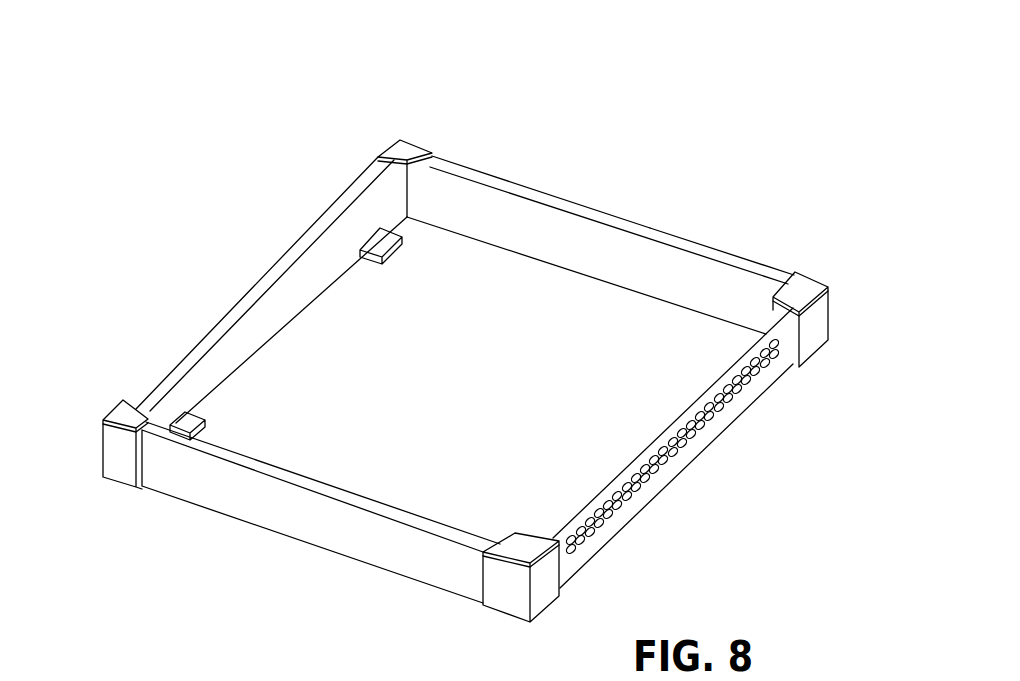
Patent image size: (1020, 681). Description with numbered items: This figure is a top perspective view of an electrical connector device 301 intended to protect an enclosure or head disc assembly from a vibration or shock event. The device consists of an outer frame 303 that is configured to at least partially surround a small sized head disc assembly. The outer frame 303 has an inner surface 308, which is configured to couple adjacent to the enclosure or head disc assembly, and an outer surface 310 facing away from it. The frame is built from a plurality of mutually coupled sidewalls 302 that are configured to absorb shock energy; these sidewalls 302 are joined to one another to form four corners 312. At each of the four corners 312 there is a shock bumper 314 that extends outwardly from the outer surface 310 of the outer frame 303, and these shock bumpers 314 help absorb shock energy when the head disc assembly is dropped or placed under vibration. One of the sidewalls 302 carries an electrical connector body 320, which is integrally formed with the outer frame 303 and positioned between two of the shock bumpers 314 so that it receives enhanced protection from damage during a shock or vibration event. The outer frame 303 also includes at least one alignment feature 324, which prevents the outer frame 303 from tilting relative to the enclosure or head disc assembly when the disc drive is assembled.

The electrical connector device 301 is at (676, 95).
The sidewalls 302 is at (508, 180).
The outer frame 303 is at (683, 245).
The inner surface 308 is at (557, 235).
The outer surface 310 is at (618, 227).
The corners 312 is at (411, 134).
The shock bumper 314 is at (395, 153).
The electrical connector body 320 is at (714, 430).
The alignment feature 324 is at (392, 250).